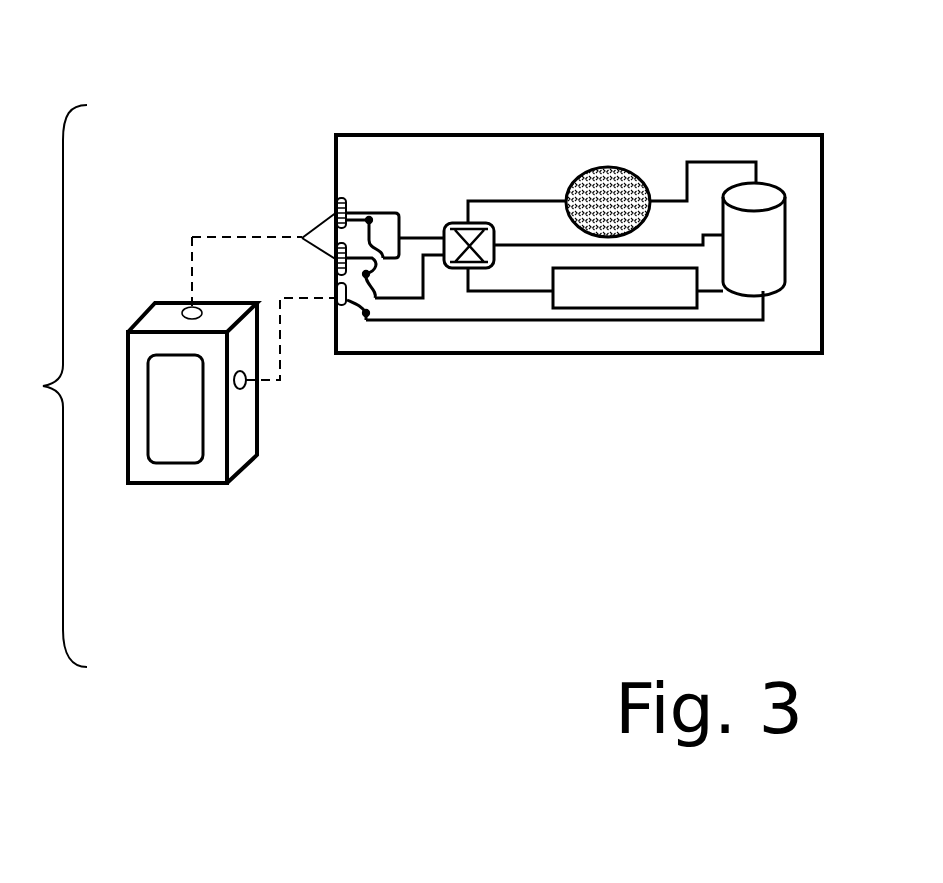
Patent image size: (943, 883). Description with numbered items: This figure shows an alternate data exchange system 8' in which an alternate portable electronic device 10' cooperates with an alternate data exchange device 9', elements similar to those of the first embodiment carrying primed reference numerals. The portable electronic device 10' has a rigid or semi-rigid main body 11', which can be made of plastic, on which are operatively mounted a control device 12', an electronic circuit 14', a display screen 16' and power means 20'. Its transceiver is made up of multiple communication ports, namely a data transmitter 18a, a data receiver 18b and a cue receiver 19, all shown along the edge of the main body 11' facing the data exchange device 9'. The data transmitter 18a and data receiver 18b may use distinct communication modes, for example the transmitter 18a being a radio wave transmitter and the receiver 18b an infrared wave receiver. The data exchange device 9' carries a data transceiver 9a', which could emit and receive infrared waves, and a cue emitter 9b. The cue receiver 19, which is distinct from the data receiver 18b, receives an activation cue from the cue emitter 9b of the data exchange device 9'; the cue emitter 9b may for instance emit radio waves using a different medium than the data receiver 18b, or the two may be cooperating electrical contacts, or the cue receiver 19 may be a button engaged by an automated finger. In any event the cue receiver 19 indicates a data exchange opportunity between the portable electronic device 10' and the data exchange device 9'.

The data exchange system 8' is at (47, 386).
The data exchange device 9' is at (192, 453).
The data transceiver 9a' is at (189, 278).
The cue emitter 9b is at (243, 389).
The portable electronic device 10' is at (296, 74).
The main body 11' is at (579, 295).
The control device 12' is at (597, 161).
The electronic circuit 14' is at (422, 184).
The display screen 16' is at (625, 342).
The data transmitter 18a is at (335, 212).
The data receiver 18b is at (337, 262).
The cue receiver 19 is at (339, 303).
The power means 20' is at (806, 239).